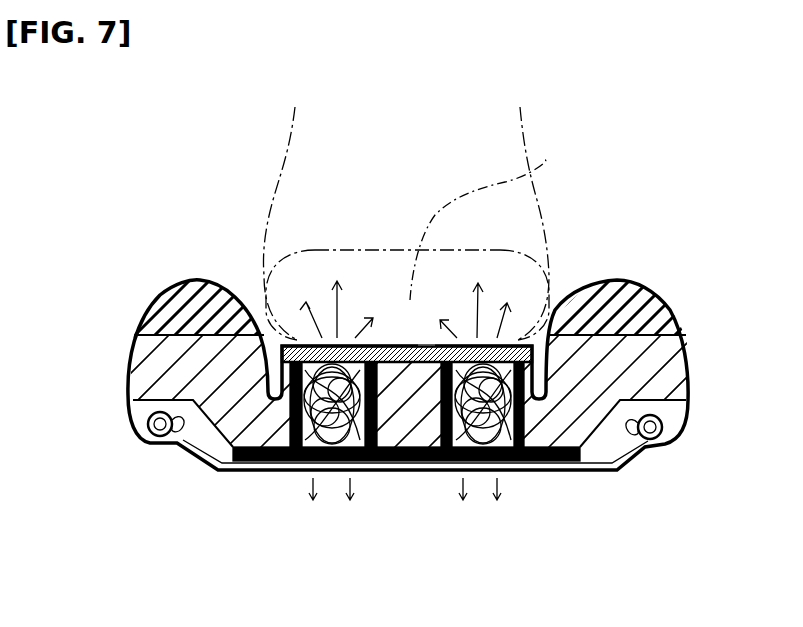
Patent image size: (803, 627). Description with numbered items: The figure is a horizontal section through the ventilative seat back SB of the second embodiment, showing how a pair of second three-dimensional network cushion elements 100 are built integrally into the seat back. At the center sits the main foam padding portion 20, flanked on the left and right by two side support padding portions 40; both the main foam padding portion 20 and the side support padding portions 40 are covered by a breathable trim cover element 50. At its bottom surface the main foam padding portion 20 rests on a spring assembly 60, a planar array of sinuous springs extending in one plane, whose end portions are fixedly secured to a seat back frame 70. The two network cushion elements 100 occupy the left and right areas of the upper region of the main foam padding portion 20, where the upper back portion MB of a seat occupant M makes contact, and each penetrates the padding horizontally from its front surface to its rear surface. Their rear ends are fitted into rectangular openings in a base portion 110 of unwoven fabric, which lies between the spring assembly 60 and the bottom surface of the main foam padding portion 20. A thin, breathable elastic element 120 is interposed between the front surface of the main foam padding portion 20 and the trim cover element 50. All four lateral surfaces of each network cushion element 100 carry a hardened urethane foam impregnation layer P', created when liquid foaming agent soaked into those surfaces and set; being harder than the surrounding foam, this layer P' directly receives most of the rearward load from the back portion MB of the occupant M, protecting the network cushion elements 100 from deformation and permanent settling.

The main foam padding portion 20 is at (683, 376).
The side support padding portions 40 is at (163, 297).
The trim cover element 50 is at (357, 335).
The spring assembly 60 is at (232, 470).
The seat back frame 70 is at (672, 433).
The second three-dimensional network cushion elements 100 is at (313, 430).
The base portion 110 is at (383, 465).
The thin elastic element 120 is at (423, 338).
The seat occupant M is at (549, 223).
The upper back portion MB is at (540, 163).
The seat back SB is at (688, 288).
The urethane foam impregnation layer P' is at (511, 509).